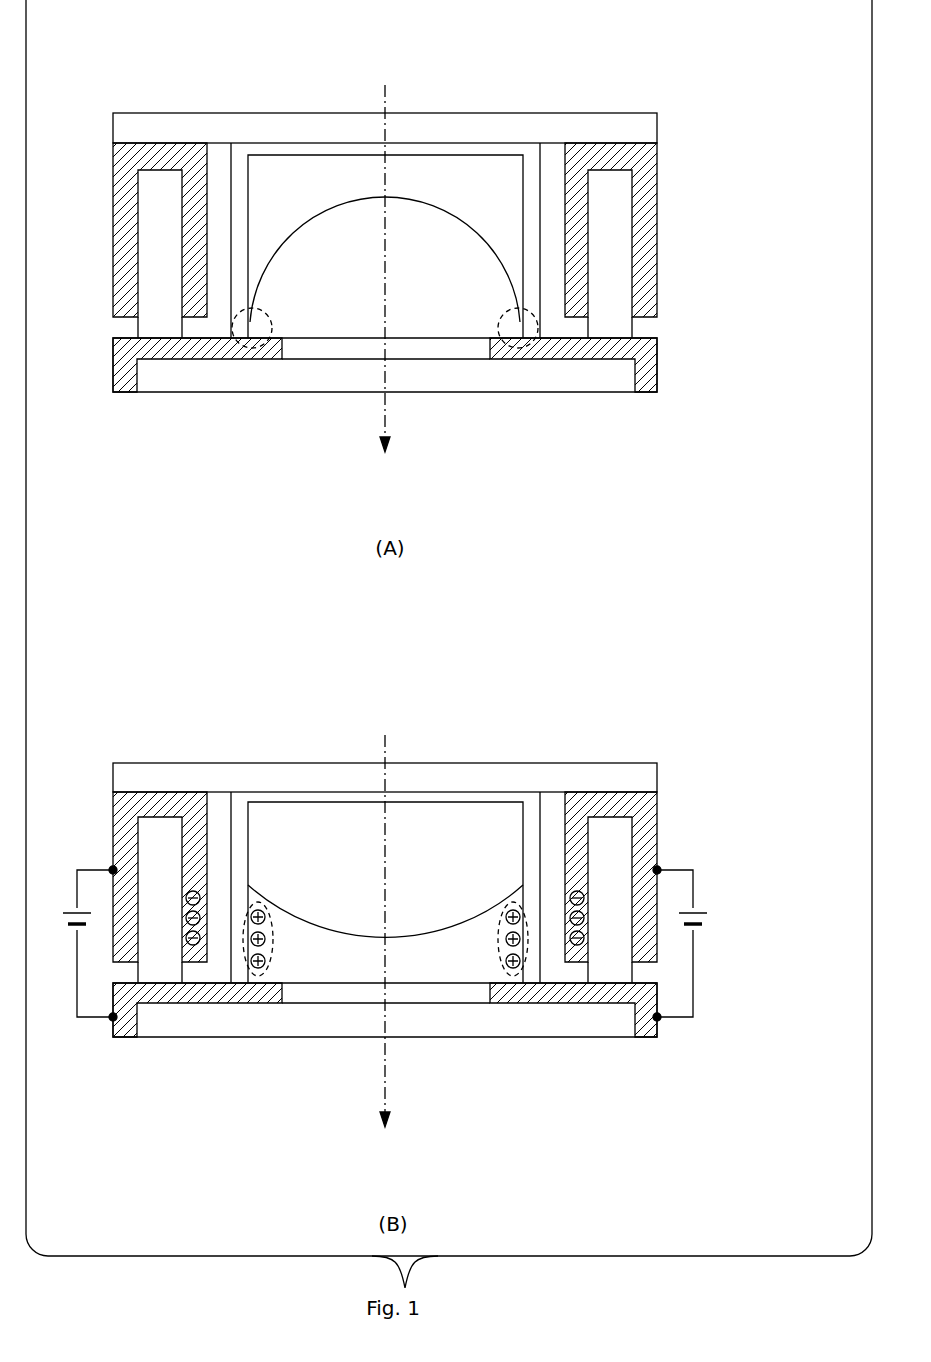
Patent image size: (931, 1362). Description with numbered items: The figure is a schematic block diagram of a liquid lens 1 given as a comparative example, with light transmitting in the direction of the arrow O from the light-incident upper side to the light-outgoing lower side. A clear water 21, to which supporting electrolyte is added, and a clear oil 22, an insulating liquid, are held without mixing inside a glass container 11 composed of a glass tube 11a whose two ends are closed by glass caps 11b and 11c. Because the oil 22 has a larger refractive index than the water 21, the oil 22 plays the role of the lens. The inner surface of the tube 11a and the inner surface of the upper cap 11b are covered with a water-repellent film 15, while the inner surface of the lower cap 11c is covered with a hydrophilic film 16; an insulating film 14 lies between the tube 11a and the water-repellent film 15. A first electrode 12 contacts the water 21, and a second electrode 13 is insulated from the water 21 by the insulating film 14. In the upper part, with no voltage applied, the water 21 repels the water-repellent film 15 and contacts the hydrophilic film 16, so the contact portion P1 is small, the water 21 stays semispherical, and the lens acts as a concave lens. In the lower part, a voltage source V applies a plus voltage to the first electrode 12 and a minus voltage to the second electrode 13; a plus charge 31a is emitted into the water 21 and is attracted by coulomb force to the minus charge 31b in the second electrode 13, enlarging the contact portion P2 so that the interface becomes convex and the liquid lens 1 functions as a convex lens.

The liquid lens 1 is at (622, 72).
The glass container 11 is at (755, 103).
The glass tube 11a is at (610, 255).
The glass cap 11b is at (627, 128).
The glass cap 11c is at (612, 373).
The first electrode 12 is at (133, 388).
The second electrode 13 is at (570, 157).
The insulating film 14 is at (197, 325).
The water-repellent film 15 is at (237, 287).
The hydrophilic film 16 is at (432, 350).
The clear water 21 is at (443, 232).
The clear oil 22 is at (268, 188).
The plus charge 31a is at (262, 973).
The minus charge 31b is at (192, 887).
The contact portion P1 is at (252, 348).
The contact portion P2 is at (268, 975).
The arrow O is at (385, 593).
The voltage source V is at (386, 943).